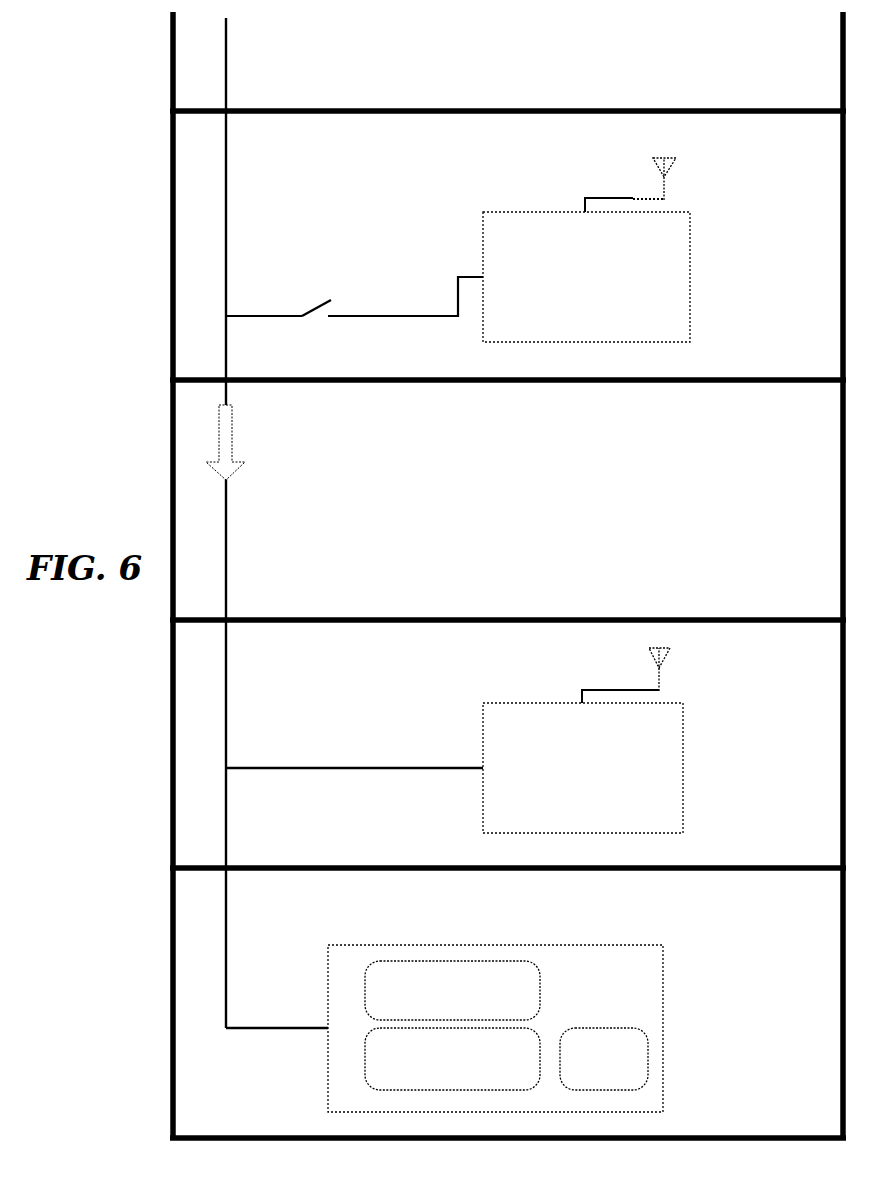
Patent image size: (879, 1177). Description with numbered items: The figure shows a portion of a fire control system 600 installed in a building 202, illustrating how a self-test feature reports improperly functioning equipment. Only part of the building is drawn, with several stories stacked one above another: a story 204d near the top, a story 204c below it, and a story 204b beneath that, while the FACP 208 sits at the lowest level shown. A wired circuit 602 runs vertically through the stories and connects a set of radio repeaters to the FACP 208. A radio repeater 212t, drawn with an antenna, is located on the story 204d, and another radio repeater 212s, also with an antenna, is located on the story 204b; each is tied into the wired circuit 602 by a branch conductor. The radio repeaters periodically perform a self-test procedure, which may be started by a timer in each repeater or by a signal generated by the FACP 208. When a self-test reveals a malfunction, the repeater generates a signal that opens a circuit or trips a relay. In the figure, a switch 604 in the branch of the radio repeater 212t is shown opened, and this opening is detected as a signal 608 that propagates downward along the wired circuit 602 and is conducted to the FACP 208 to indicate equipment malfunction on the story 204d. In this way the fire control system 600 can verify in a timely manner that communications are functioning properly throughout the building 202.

The building 202 is at (170, 240).
The story 204d is at (802, 303).
The story 204c is at (801, 522).
The story 204b is at (788, 783).
The fire control system 600 is at (416, 198).
The wired circuit 602 is at (226, 557).
The switch 604 is at (312, 268).
The signal 608 is at (232, 457).
The radio repeater 212t is at (614, 290).
The radio repeater 212s is at (603, 751).
The FACP 208 is at (663, 1028).